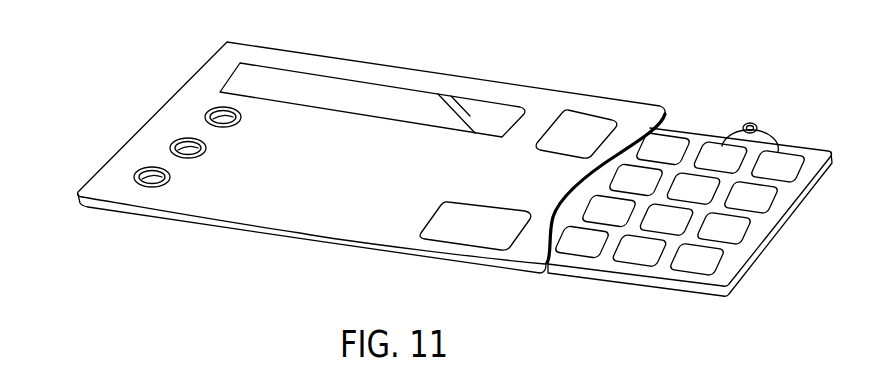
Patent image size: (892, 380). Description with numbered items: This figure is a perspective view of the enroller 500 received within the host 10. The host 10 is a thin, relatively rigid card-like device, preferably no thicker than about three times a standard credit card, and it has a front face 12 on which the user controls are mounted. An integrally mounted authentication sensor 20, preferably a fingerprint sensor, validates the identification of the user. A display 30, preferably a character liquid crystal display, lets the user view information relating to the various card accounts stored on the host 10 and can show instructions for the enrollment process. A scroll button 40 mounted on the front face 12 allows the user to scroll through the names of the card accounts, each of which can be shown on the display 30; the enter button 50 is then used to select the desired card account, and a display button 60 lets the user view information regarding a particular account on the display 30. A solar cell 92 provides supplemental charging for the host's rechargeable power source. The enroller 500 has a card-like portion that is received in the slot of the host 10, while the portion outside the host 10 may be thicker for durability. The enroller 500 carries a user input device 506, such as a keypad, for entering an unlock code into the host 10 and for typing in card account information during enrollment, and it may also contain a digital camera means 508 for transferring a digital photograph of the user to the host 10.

The host 10 is at (506, 60).
The front face 12 is at (275, 212).
The authentication sensor 20 is at (446, 227).
The display 30 is at (347, 103).
The scroll button 40 is at (217, 116).
The enter button 50 is at (183, 145).
The display button 60 is at (150, 175).
The solar cell 92 is at (588, 127).
The enroller 500 is at (590, 191).
The user input device 506 is at (793, 172).
The digital camera means 508 is at (745, 124).